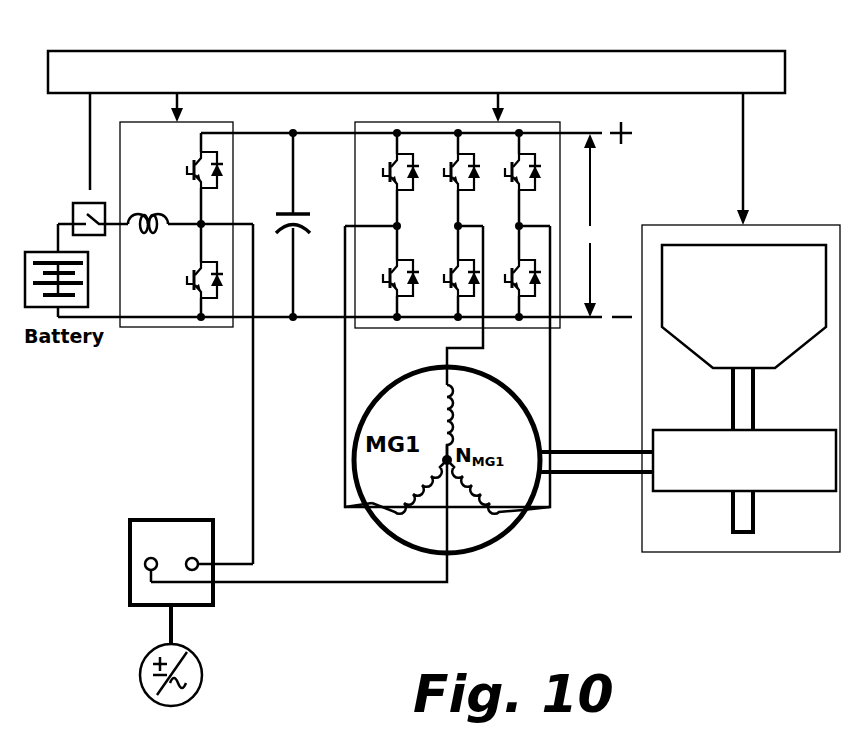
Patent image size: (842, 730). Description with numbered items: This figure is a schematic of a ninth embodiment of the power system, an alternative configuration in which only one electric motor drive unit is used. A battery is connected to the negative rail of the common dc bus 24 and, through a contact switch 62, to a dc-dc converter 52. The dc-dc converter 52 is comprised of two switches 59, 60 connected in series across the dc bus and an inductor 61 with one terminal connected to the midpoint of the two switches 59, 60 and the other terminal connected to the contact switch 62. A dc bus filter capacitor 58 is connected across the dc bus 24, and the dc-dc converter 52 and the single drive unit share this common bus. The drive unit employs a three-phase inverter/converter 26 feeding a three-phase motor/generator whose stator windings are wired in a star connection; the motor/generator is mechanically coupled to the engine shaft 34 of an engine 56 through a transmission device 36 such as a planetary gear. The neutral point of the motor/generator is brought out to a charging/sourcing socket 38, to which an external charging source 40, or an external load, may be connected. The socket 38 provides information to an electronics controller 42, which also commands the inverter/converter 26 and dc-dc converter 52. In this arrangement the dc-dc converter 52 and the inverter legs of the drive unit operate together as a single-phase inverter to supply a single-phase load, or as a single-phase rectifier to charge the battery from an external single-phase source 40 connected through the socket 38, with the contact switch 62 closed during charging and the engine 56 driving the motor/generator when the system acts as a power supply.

The common dc bus 24 is at (588, 230).
The inverter/converter 26 is at (545, 122).
The engine shaft 34 is at (729, 409).
The transmission device 36 is at (690, 397).
The charging/sourcing socket 38 is at (155, 520).
The external charging source 40 is at (203, 668).
The electronics controller 42 is at (748, 77).
The dc-dc converter 52 is at (188, 290).
The engine 56 is at (746, 258).
The dc bus filter capacitor 58 is at (291, 240).
The switch 59 is at (205, 158).
The switch 60 is at (197, 293).
The inductor 61 is at (148, 237).
The contact switch 62 is at (88, 190).